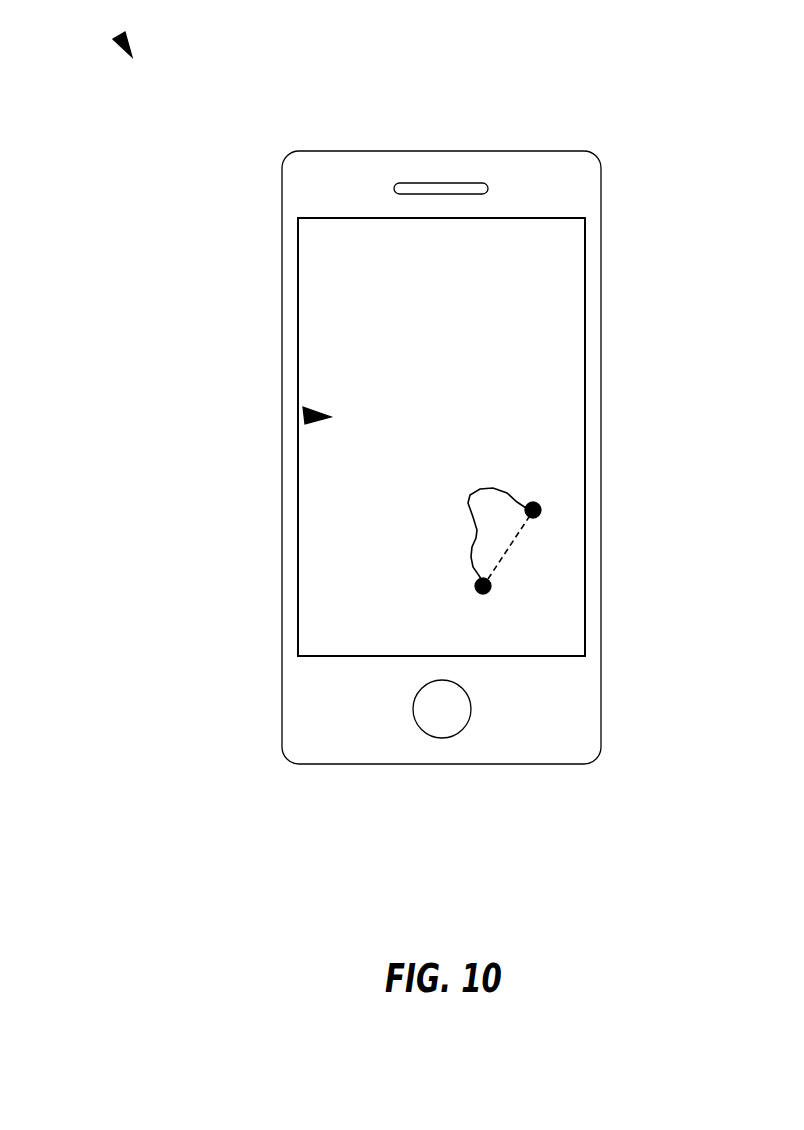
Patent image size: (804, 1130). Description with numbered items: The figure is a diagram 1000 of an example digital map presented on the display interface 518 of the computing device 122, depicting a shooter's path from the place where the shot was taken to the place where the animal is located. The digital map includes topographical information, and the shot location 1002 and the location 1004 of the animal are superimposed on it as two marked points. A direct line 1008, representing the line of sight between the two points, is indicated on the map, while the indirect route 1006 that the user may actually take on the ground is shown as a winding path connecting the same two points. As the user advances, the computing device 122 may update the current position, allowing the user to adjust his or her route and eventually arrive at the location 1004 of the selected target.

The diagram 1000 is at (115, 37).
The computing device 122 is at (333, 151).
The display interface 518 is at (312, 414).
The shot location 1002 is at (490, 588).
The location of the animal 1004 is at (540, 506).
The indirect route 1006 is at (477, 538).
The direct line 1008 is at (513, 540).